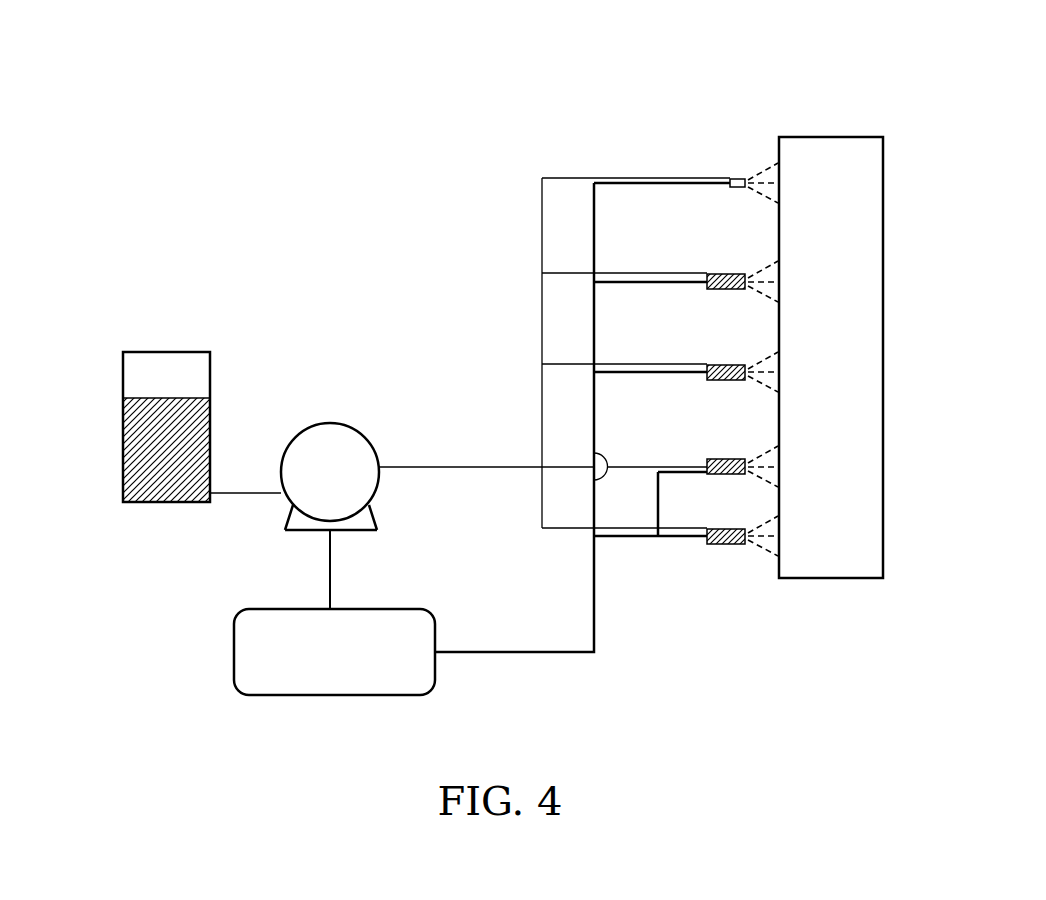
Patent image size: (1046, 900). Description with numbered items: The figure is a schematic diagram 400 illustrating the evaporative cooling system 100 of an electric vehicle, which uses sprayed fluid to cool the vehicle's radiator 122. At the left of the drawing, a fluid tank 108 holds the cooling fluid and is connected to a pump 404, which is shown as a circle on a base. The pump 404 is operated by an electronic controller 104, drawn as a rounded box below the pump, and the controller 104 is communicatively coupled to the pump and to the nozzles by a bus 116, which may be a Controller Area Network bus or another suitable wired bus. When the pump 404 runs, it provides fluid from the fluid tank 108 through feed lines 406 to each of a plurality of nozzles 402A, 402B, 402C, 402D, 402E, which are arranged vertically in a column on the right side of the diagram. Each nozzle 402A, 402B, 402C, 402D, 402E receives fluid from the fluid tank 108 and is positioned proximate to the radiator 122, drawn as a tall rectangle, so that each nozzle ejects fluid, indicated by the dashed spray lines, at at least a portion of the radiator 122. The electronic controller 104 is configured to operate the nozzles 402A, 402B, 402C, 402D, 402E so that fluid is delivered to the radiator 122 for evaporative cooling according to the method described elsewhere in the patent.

The schematic diagram 400 is at (152, 49).
The evaporative cooling system 100 is at (532, 124).
The fluid tank 108 is at (123, 376).
The pump 404 is at (318, 426).
The electronic controller 104 is at (234, 651).
The bus 116 is at (594, 635).
The feed lines 406 is at (542, 328).
The nozzle 402A is at (736, 178).
The nozzle 402B is at (712, 273).
The nozzle 402C is at (712, 364).
The nozzle 402D is at (712, 458).
The nozzle 402E is at (725, 546).
The radiator 122 is at (883, 262).